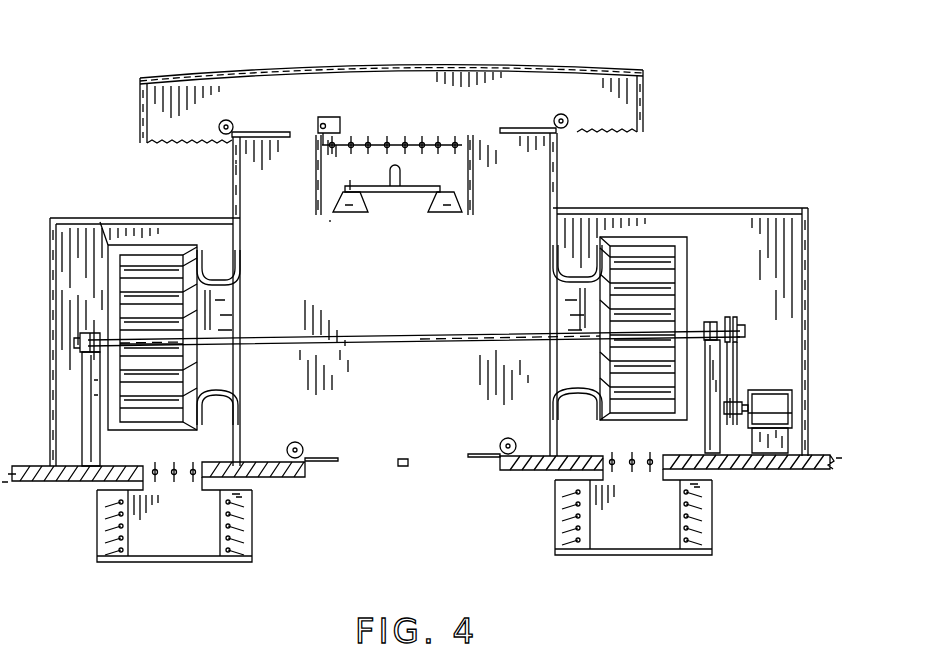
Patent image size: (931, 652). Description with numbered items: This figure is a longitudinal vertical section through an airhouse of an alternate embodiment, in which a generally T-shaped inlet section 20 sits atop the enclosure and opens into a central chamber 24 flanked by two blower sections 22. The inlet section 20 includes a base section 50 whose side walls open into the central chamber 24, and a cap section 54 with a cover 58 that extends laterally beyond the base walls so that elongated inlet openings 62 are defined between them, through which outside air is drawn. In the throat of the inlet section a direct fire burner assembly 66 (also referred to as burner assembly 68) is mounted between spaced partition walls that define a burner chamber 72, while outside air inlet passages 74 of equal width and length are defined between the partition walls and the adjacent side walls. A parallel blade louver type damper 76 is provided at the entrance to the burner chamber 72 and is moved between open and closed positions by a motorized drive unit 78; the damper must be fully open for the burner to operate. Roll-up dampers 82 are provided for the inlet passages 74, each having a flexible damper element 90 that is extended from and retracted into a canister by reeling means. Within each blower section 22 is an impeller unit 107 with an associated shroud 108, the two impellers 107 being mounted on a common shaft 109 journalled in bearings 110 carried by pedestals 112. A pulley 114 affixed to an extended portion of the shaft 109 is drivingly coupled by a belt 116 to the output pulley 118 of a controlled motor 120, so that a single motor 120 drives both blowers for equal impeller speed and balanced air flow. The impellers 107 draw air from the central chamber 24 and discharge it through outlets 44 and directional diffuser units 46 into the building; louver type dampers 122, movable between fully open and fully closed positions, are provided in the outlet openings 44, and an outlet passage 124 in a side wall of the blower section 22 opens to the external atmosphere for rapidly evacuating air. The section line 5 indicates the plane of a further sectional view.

The section line 5- 5 is at (626, 170).
The inlet section 20 is at (552, 60).
The blower sections 22 is at (90, 259).
The central chamber 24 is at (418, 273).
The outlet 44 is at (150, 490).
The directional diffuser unit 46 is at (245, 528).
The base section 50 is at (230, 175).
The cap section 54 is at (138, 101).
The cover 58 is at (383, 64).
The inlet openings 62 is at (160, 144).
The burner assembly 66 is at (372, 222).
The burner assembly 68 is at (405, 194).
The burner chamber 72 is at (462, 172).
The outside air inlet passages 74 is at (258, 180).
The damper 76 is at (422, 140).
The motorized drive unit 78 is at (340, 120).
The dampers 82 is at (220, 125).
The damper element 90 is at (268, 131).
The impeller unit 107 is at (143, 257).
The shroud 108 is at (240, 290).
The common shaft 109 is at (398, 336).
The bearings 110 is at (78, 336).
The pedestals 112 is at (88, 400).
The pulley 114 is at (739, 319).
The belt 116 is at (738, 357).
The output pulley 118 is at (740, 400).
The motor 120 is at (790, 400).
The dampers 122 is at (177, 484).
The outlet passage 124 is at (104, 222).